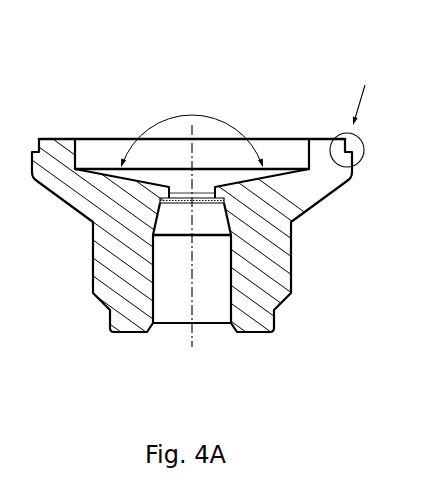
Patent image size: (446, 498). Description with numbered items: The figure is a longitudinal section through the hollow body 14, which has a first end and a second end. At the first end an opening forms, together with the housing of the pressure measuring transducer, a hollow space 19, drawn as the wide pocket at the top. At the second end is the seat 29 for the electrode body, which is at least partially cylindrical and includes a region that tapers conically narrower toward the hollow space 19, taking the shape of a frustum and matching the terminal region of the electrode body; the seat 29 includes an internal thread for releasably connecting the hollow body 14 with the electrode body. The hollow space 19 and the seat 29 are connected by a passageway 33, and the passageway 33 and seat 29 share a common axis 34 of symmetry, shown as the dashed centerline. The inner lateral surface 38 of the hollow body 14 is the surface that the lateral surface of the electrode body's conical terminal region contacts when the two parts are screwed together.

The hollow body 14 is at (52, 167).
The hollow space 19 is at (288, 160).
The seat 29 is at (222, 308).
The passageway 33 is at (181, 196).
The axis of symmetry 34 is at (192, 282).
The inner lateral surface 38 is at (250, 220).